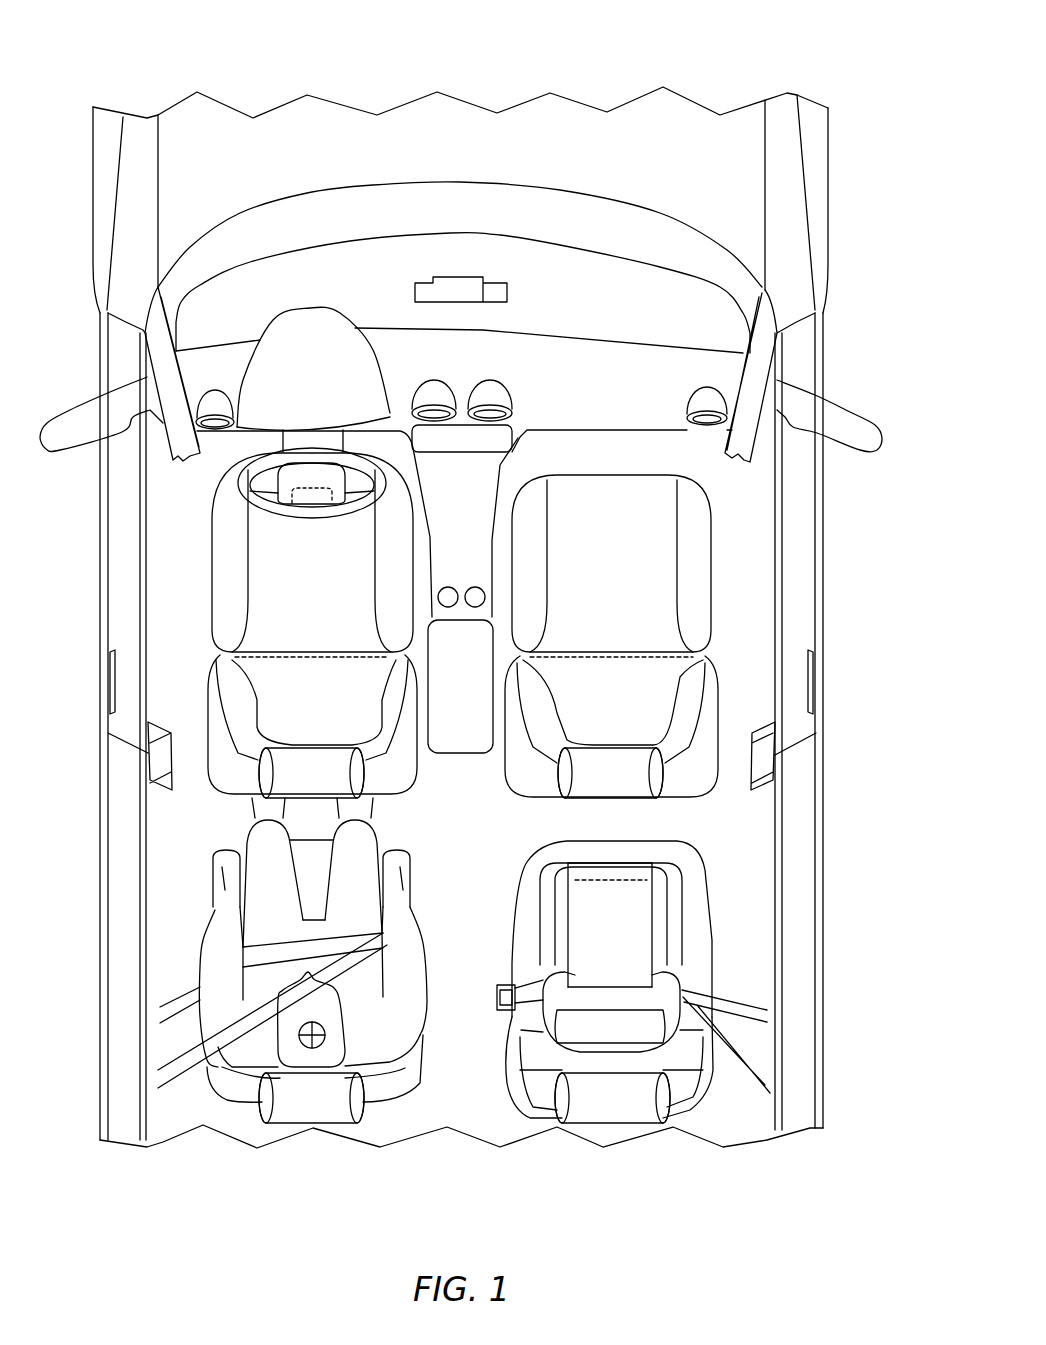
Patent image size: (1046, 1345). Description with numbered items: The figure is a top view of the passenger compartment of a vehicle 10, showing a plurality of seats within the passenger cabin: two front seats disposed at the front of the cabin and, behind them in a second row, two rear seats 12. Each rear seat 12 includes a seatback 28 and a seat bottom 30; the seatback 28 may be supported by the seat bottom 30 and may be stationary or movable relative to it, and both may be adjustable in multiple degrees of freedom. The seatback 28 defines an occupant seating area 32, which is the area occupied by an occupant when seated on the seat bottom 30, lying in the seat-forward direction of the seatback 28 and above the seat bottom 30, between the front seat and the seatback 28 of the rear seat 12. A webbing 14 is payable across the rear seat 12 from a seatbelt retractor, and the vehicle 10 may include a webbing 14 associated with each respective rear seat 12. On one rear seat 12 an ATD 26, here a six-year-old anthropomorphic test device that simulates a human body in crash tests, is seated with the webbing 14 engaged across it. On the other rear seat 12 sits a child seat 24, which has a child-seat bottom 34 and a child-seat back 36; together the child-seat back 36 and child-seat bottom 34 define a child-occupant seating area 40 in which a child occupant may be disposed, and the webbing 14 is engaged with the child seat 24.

The vehicle 10 is at (768, 58).
The rear seat 12 is at (173, 860).
The webbing 14 is at (183, 1057).
The child seat 24 is at (596, 992).
The ATD 26 is at (217, 970).
The seatback 28 is at (225, 1100).
The seat bottom 30 is at (305, 865).
The occupant seating area 32 is at (200, 933).
The child-seat bottom 34 is at (550, 1043).
The child-seat back 36 is at (597, 947).
The child-occupant seating area 40 is at (617, 910).